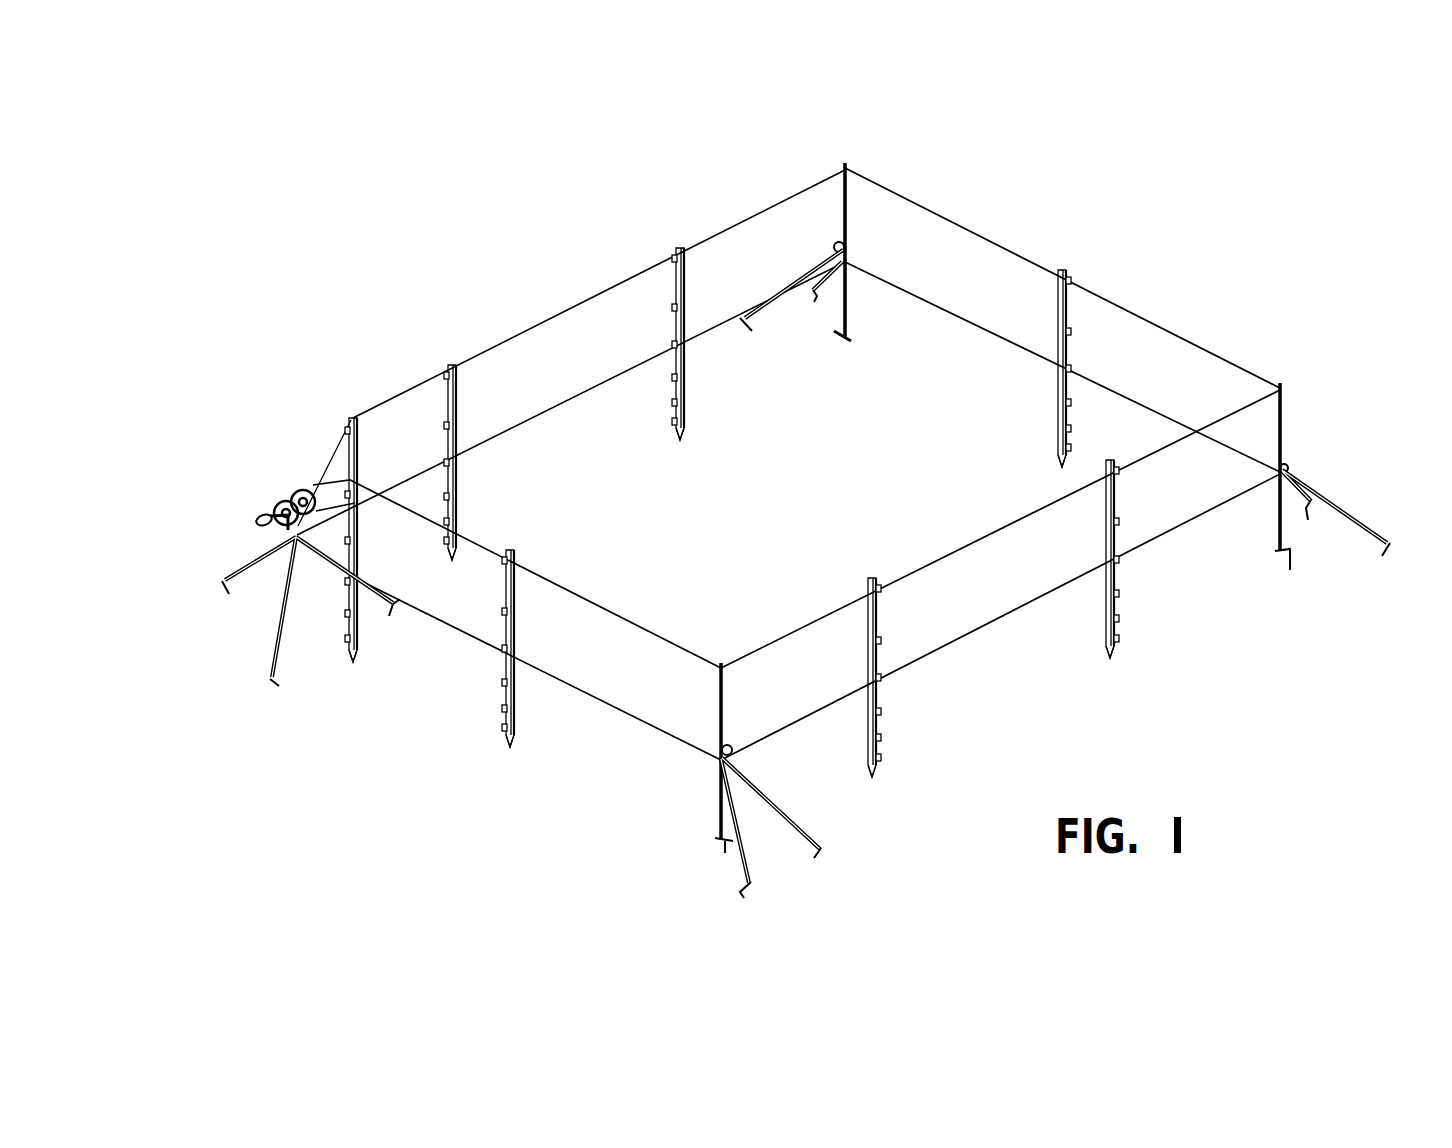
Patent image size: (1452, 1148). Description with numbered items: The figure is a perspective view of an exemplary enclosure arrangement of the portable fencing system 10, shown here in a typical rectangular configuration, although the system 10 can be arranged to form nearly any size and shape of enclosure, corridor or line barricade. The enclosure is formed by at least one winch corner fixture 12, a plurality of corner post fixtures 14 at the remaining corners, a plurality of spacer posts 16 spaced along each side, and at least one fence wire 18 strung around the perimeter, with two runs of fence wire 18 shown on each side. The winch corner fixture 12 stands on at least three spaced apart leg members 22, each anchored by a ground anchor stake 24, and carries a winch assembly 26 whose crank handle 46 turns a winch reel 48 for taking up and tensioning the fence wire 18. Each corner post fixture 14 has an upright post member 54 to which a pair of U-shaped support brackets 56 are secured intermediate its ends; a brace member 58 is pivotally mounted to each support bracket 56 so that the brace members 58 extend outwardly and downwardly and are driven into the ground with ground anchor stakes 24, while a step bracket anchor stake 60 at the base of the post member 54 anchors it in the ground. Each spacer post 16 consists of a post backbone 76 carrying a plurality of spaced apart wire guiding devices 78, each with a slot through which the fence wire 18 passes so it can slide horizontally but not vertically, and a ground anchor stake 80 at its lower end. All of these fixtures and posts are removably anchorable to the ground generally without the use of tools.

The portable fencing system 10 is at (1178, 142).
The winch corner fixture 12 is at (238, 458).
The corner post fixture 14 is at (852, 162).
The spacer post 16 is at (1072, 266).
The fence wire 18 is at (570, 308).
The leg member 22 is at (258, 573).
The ground anchor stake 24 is at (808, 302).
The winch assembly 26 is at (278, 498).
The crank handle 46 is at (260, 516).
The winch reel 48 is at (302, 488).
The post member 54 is at (849, 222).
The support bracket 56 is at (838, 242).
The brace member 58 is at (812, 306).
The step bracket anchor stake 60 is at (845, 345).
The post backbone 76 is at (1058, 314).
The wire guiding device 78 is at (678, 248).
The ground anchor stake 80 is at (680, 440).